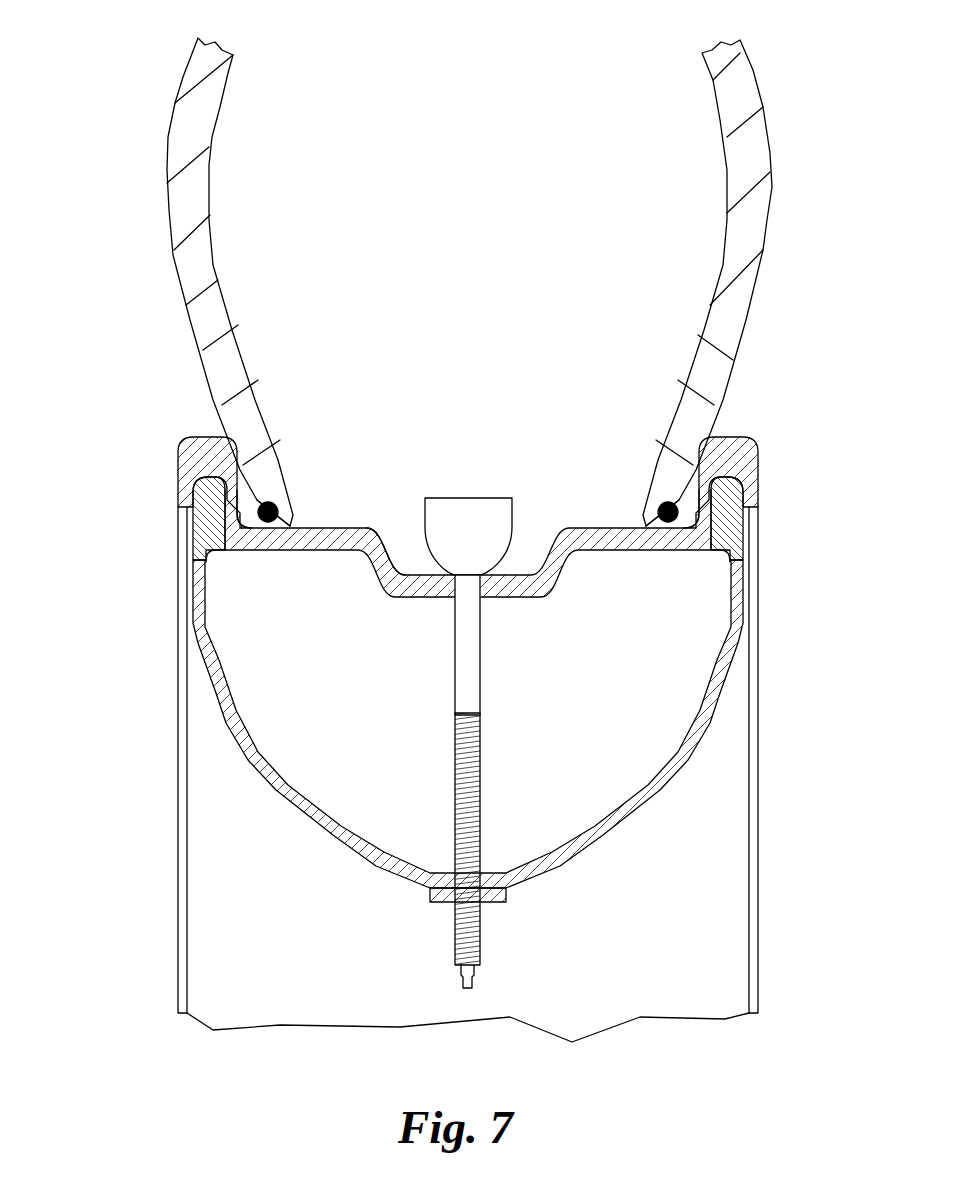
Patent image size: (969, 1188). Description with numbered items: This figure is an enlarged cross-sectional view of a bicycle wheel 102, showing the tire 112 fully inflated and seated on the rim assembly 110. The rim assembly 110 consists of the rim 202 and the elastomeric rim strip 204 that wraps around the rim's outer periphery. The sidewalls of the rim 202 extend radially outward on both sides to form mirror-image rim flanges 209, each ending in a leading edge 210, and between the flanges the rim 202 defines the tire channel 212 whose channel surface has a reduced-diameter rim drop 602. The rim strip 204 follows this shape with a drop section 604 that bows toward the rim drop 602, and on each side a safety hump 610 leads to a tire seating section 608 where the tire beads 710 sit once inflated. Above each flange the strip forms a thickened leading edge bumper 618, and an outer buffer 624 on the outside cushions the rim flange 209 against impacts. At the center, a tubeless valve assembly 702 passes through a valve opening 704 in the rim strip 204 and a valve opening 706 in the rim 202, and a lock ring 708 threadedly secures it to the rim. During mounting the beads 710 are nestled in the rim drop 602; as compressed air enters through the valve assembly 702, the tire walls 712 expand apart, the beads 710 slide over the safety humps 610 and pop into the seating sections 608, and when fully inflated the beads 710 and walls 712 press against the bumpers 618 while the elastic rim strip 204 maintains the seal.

The bicycle wheel 102 is at (130, 73).
The rim assembly 110 is at (180, 545).
The tire 112 is at (205, 322).
The rim 202 is at (750, 580).
The rim strip 204 is at (752, 440).
The rim flange 209 is at (220, 510).
The leading edge 210 is at (232, 482).
The tire channel 212 is at (402, 408).
The rim drop 602 is at (538, 502).
The drop section 604 is at (390, 562).
The tire seating section 608 is at (270, 528).
The safety hump 610 is at (312, 528).
The leading edge bumper 618 is at (205, 455).
The outer buffer 624 is at (187, 487).
The valve assembly 702 is at (487, 497).
The valve opening 704 is at (492, 594).
The valve opening 706 is at (446, 608).
The lock ring 708 is at (508, 897).
The tire bead 710 is at (262, 492).
The tire wall 712 is at (232, 358).